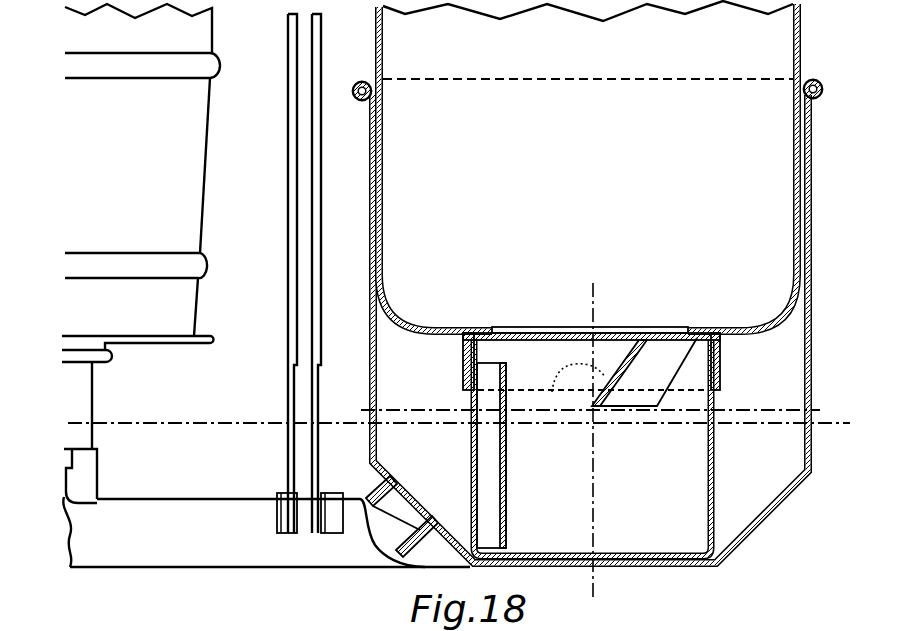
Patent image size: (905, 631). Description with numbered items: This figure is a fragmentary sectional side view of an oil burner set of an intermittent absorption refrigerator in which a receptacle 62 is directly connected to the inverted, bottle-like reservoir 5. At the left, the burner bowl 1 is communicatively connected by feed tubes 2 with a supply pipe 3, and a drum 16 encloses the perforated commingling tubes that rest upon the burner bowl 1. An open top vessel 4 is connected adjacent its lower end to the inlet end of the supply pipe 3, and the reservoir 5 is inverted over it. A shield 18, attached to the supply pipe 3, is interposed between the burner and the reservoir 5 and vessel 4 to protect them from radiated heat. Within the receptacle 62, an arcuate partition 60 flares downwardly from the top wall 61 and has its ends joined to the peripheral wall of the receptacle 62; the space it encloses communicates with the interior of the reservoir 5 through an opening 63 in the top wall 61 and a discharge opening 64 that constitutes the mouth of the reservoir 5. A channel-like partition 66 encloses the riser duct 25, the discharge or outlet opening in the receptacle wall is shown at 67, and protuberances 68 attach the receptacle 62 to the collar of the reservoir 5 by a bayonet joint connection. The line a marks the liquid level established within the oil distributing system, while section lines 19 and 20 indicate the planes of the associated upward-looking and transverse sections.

The burner bowl 1 is at (88, 392).
The feed tubes 2 is at (90, 470).
The supply pipe 3 is at (266, 532).
The open top vessel 4 is at (811, 296).
The reservoir 5 is at (588, 166).
The drum 16 is at (142, 170).
The shield 18 is at (290, 228).
The section line 19— 19 is at (344, 337).
The section line 20— 20 is at (606, 295).
The riser duct 25 is at (488, 457).
The arcuate partition 60 is at (622, 355).
The top wall 61 is at (533, 327).
The receptacle 62 is at (716, 406).
The opening 63 is at (648, 372).
The discharge opening 64 is at (672, 328).
The channel-like partition 66 is at (506, 505).
The discharge opening 67 is at (471, 430).
The protuberances 68 is at (569, 371).
The liquid level line a is at (850, 424).